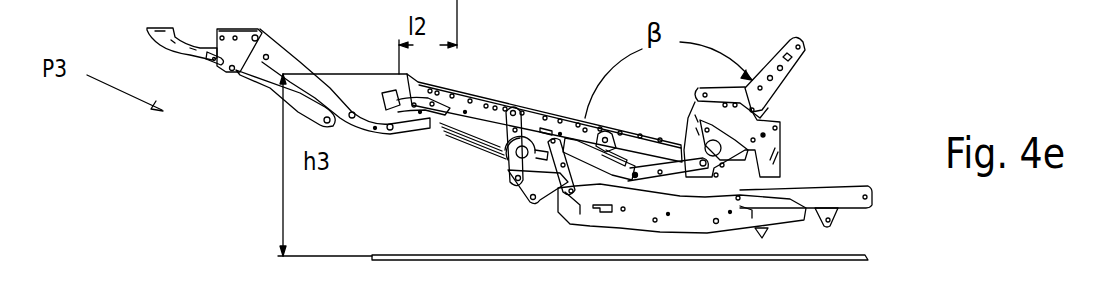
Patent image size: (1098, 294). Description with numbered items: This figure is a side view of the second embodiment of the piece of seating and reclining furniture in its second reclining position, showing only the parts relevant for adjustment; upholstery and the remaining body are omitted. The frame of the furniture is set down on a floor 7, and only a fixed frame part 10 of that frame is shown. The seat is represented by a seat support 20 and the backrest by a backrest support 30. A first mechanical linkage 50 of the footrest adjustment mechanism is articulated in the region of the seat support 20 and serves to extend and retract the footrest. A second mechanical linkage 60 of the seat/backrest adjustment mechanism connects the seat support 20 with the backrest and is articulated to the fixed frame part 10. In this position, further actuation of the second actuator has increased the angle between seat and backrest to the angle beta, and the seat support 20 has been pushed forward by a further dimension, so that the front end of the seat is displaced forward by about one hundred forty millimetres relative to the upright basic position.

The floor 7 is at (862, 257).
The fixed frame part 10 is at (620, 202).
The seat support 20 is at (490, 100).
The backrest support 30 is at (803, 52).
The first mechanical linkage 50 is at (256, 63).
The second mechanical linkage 60 is at (596, 160).